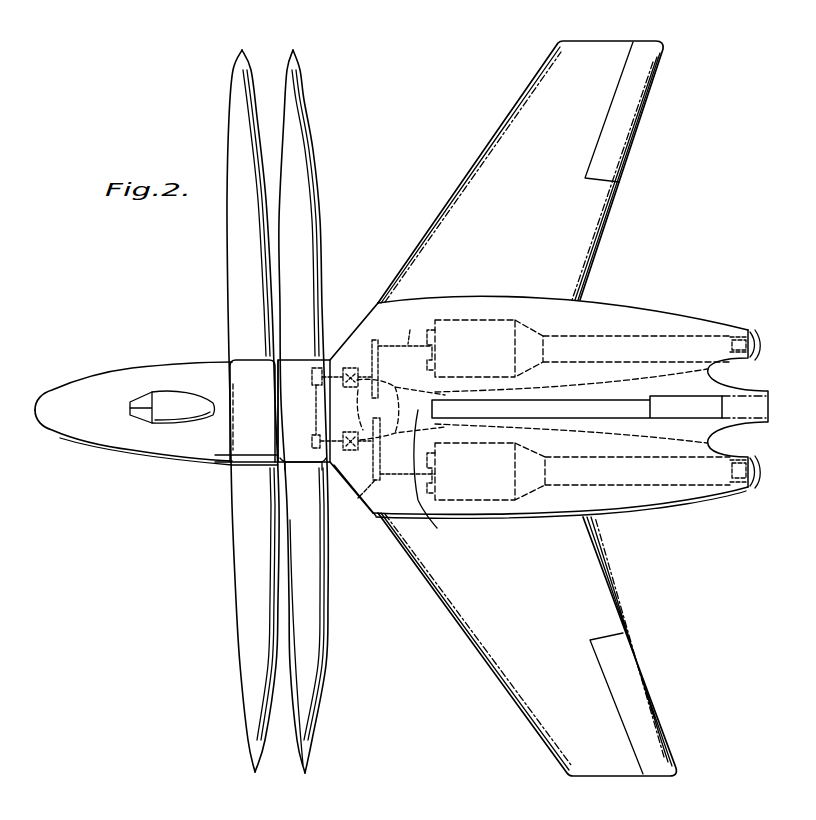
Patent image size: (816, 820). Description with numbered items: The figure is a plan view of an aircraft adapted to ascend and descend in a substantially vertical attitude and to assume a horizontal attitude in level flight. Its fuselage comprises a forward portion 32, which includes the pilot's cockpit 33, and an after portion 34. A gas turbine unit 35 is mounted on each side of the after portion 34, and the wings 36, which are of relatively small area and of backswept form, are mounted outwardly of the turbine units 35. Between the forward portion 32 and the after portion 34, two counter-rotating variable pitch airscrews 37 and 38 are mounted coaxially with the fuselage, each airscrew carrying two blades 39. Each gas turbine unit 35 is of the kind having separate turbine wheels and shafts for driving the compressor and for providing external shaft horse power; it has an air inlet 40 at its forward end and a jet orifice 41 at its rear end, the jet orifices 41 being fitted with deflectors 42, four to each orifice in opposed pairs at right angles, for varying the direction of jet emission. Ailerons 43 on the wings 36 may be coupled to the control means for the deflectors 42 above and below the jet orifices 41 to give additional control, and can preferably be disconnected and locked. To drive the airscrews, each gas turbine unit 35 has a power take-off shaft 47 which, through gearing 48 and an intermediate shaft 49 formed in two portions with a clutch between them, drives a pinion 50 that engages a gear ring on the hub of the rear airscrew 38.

The forward portion 32 is at (138, 352).
The pilot's cockpit 33 is at (180, 412).
The after portion 34 is at (570, 423).
The gas turbine unit 35 is at (503, 320).
The wing 36 is at (467, 172).
The variable pitch airscrew 37 is at (247, 390).
The rear airscrew 38 is at (323, 322).
The blade 39 is at (285, 115).
The air inlet 40 is at (368, 308).
The jet orifice 41 is at (730, 342).
The deflector 42 is at (752, 334).
The aileron 43 is at (623, 170).
The power take-off shaft 47 is at (418, 325).
The gearing 48 is at (401, 409).
The intermediate shaft 49 is at (353, 409).
The pinion 50 is at (320, 393).